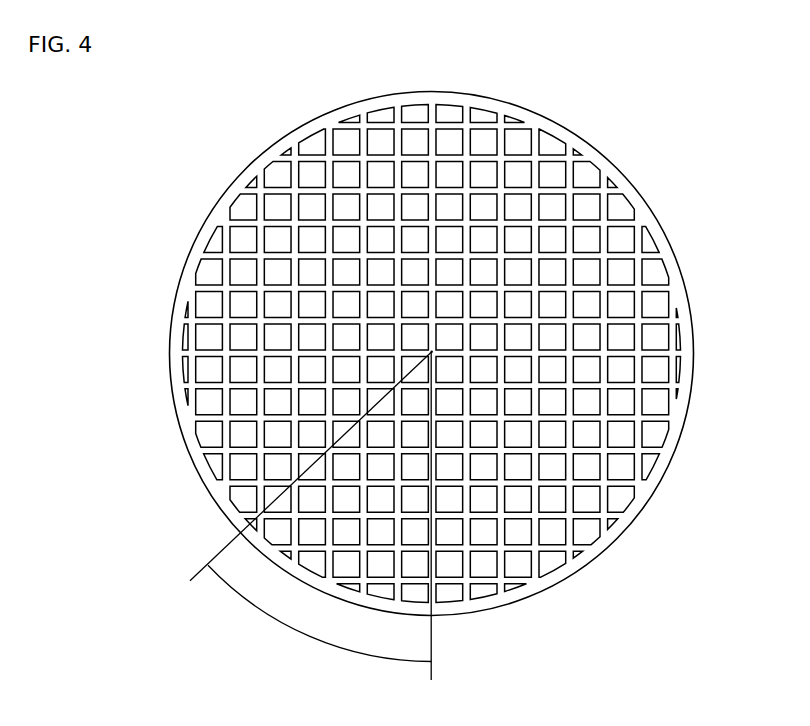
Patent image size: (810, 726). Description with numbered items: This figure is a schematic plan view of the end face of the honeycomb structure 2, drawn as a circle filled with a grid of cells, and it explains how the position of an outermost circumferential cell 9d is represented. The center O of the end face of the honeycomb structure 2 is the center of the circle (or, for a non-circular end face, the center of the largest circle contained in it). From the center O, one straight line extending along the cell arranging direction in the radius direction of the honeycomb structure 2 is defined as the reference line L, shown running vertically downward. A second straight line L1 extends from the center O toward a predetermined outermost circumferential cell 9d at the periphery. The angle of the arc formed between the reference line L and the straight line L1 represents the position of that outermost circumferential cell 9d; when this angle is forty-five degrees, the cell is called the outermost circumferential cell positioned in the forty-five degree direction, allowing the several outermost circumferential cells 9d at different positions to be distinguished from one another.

The honeycomb structure 2 is at (627, 528).
The outermost circumferential cell 9d is at (248, 522).
The center of the end face O is at (432, 352).
The reference line L is at (432, 653).
The straight line L1 is at (203, 573).